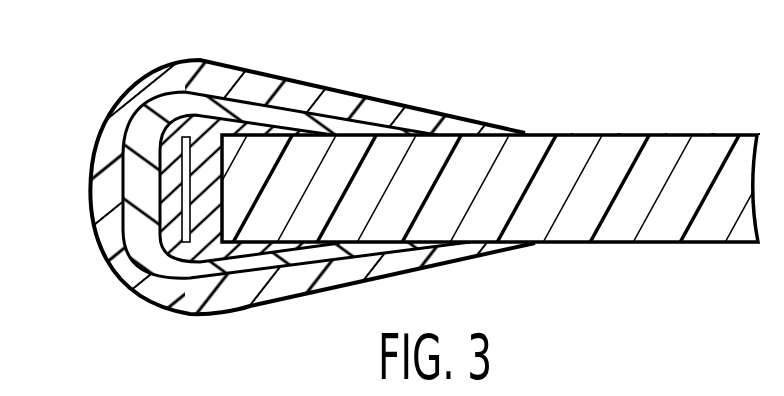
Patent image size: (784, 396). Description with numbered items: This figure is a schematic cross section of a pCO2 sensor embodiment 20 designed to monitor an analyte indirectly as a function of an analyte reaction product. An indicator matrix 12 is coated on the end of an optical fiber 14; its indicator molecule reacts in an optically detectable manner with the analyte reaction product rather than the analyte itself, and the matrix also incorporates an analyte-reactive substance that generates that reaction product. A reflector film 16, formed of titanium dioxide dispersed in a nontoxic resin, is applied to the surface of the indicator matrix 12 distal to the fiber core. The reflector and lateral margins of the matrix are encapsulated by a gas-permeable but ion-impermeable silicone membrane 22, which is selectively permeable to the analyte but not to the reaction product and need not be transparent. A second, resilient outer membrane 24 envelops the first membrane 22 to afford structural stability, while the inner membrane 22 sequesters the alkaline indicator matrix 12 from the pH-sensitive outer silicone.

The embodiment 20 is at (101, 85).
The indicator matrix 12 is at (206, 145).
The optical fiber 14 is at (585, 156).
The reflector film 16 is at (135, 195).
The membrane 22 is at (153, 250).
The second membrane 24 is at (297, 278).